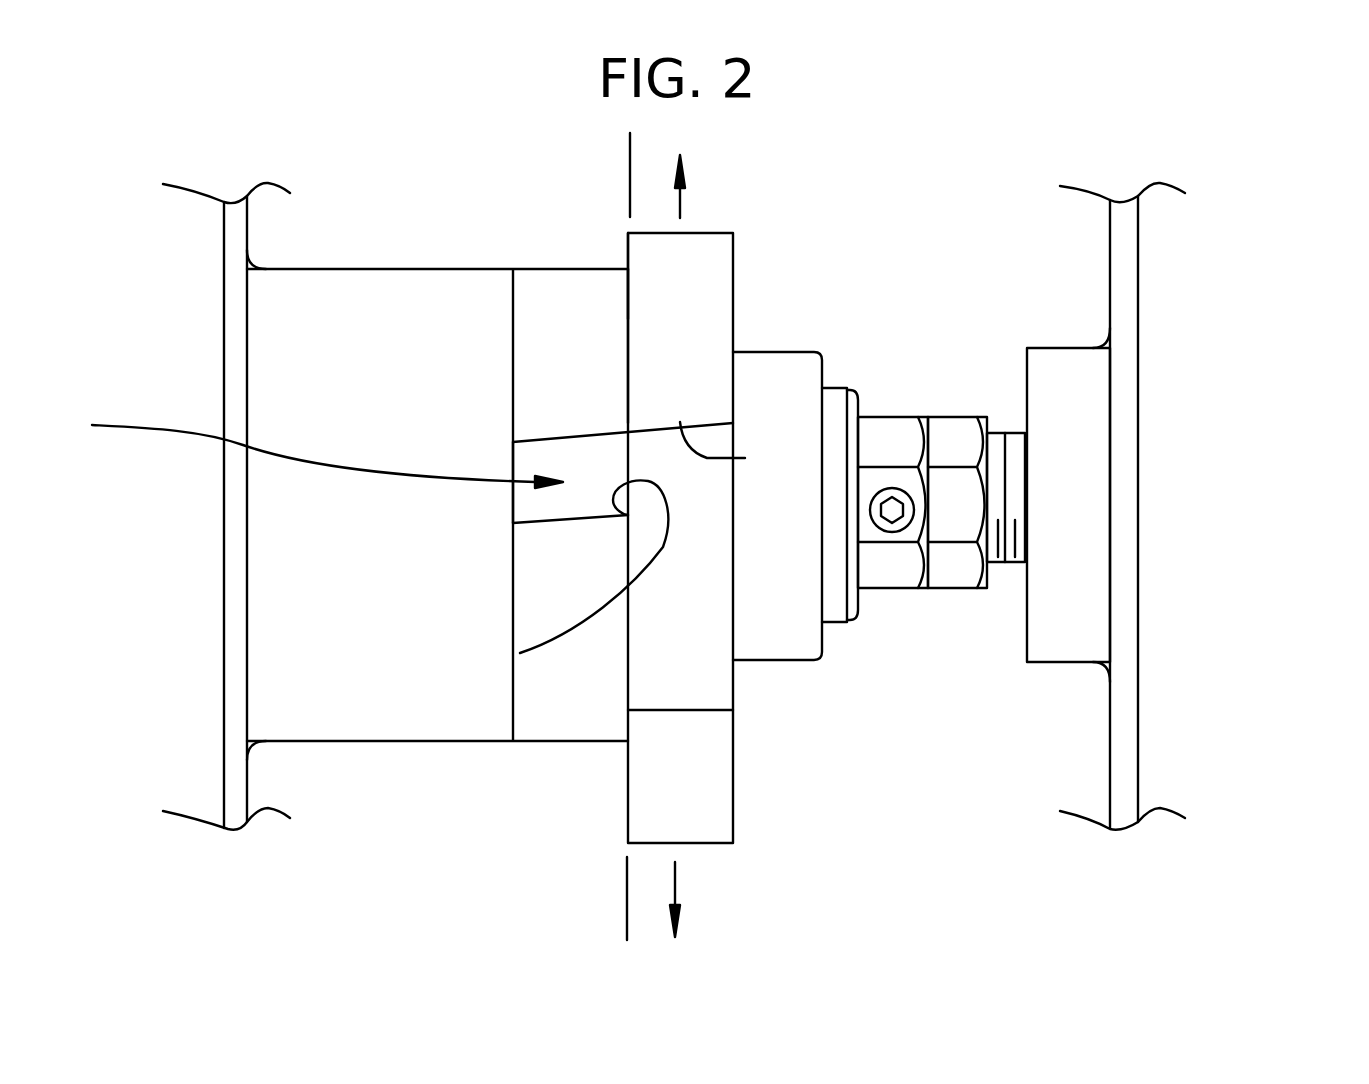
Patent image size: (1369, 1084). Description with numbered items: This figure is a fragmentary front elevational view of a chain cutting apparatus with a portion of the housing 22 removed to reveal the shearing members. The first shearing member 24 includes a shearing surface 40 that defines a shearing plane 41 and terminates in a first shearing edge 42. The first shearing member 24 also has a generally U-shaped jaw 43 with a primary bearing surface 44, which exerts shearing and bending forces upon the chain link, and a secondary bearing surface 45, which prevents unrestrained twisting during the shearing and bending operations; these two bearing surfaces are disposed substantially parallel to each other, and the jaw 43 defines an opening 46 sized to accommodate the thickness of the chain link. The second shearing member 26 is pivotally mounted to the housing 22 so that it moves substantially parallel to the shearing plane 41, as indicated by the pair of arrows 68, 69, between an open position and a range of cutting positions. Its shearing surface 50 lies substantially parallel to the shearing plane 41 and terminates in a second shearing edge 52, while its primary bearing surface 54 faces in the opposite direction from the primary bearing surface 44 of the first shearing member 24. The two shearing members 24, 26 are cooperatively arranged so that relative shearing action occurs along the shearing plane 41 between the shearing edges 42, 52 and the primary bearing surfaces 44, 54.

The housing 22 is at (1138, 295).
The first shearing member 24 is at (547, 308).
The second shearing member 26 is at (713, 277).
The shearing surface 40 is at (628, 319).
The shearing plane 41 is at (628, 173).
The first shearing edge 42 is at (520, 653).
The U-shaped jaw 43 is at (546, 498).
The primary bearing surface 44 is at (542, 522).
The secondary bearing surface 45 is at (535, 442).
The opening 46 is at (306, 443).
The shearing surface 50 is at (628, 347).
The second shearing edge 52 is at (630, 422).
The primary bearing surface 54 is at (745, 458).
The arrow 68 is at (683, 200).
The arrow 69 is at (676, 885).